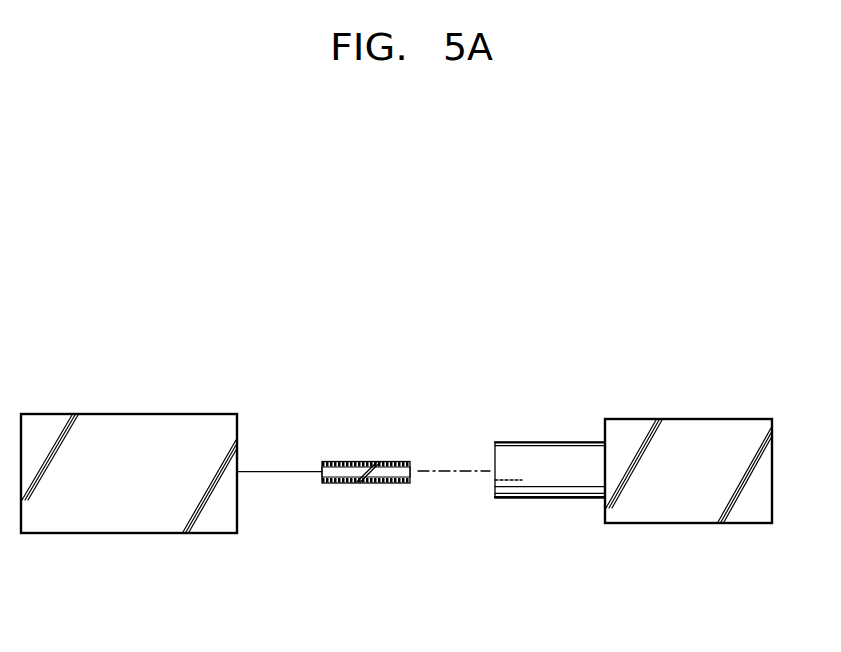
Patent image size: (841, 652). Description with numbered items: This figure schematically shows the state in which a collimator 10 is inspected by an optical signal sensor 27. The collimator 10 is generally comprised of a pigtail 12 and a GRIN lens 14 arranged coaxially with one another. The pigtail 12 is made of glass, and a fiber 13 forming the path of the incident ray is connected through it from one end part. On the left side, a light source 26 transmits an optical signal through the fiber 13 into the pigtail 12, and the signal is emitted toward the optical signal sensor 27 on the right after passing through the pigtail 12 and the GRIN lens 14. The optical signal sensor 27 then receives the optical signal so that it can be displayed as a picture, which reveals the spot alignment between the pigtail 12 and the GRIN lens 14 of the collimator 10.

The collimator 10 is at (350, 441).
The pigtail 12 is at (346, 477).
The fiber 13 is at (309, 475).
The GRIN lens 14 is at (393, 477).
The light source 26 is at (128, 533).
The optical signal sensor 27 is at (523, 430).